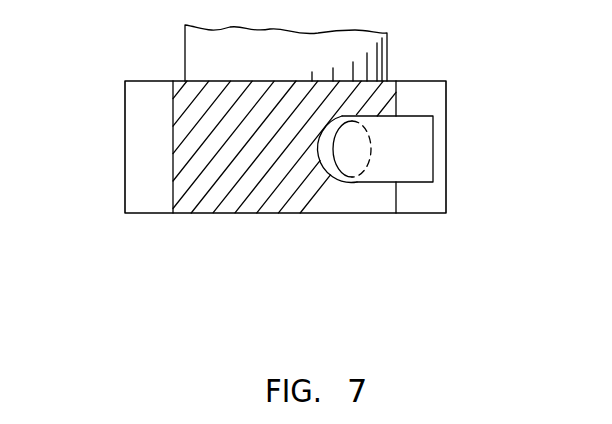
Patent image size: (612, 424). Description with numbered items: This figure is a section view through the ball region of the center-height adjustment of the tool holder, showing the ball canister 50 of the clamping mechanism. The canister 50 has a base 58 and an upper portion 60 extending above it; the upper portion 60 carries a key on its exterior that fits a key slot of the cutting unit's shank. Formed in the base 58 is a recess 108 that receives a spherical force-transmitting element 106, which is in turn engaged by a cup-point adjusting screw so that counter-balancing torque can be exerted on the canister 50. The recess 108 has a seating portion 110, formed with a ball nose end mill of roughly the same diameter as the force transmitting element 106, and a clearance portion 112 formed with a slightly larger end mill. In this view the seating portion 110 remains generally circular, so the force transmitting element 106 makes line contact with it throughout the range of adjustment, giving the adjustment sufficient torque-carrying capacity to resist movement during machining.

The ball canister 50 is at (452, 118).
The base 58 is at (142, 213).
The upper portion 60 is at (183, 53).
The spherical force-transmitting element 106 is at (378, 185).
The recess 108 is at (418, 171).
The seating portion 110 is at (316, 191).
The clearance portion 112 is at (409, 114).